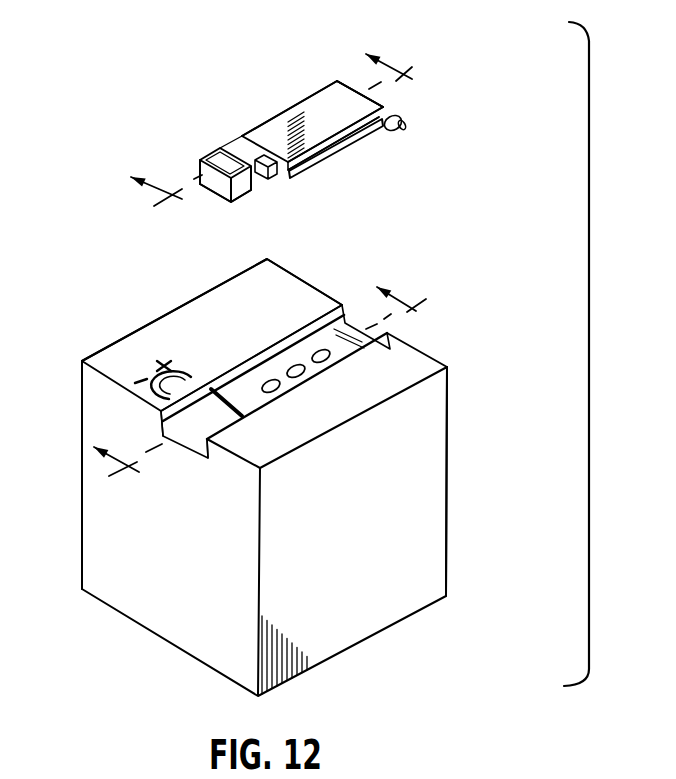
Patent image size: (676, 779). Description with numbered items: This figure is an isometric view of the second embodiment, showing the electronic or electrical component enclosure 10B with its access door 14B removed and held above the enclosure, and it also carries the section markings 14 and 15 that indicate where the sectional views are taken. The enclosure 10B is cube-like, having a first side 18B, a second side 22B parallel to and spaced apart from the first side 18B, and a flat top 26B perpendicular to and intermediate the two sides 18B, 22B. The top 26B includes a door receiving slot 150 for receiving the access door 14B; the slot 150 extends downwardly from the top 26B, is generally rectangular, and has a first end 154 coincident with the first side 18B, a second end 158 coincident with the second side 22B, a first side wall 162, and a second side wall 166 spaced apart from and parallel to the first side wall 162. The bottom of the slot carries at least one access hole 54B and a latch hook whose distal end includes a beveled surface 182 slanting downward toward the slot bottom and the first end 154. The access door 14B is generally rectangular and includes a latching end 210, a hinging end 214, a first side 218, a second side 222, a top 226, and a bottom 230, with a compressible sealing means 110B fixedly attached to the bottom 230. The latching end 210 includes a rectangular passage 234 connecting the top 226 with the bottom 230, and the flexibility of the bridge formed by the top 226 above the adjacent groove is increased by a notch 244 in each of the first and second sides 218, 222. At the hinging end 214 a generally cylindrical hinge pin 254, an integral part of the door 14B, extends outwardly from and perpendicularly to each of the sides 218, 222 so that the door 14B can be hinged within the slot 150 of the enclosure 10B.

The electronic or electrical component enclosure 10B is at (452, 510).
The access door 14B is at (277, 96).
The first side 18B is at (100, 550).
The second side 22B is at (450, 432).
The flat top 26B is at (207, 318).
The access hole 54B is at (340, 364).
The compressible sealing means 110B is at (364, 141).
The door receiving slot 150 is at (212, 364).
The first end 154 is at (177, 458).
The second end 158 is at (352, 303).
The first side wall 162 is at (165, 420).
The second side wall 166 is at (206, 448).
The beveled surface 182 is at (110, 341).
The latching end 210 is at (199, 162).
The hinging end 214 is at (385, 102).
The first side 218 is at (317, 90).
The second side 222 is at (332, 148).
The top 226 is at (253, 136).
The bottom 230 is at (396, 137).
The rectangular passage 234 is at (219, 194).
The notch 244 is at (231, 146).
The hinge pin 254 is at (420, 127).
The section line 14- 14 is at (260, 386).
The section line 15- 15 is at (271, 135).